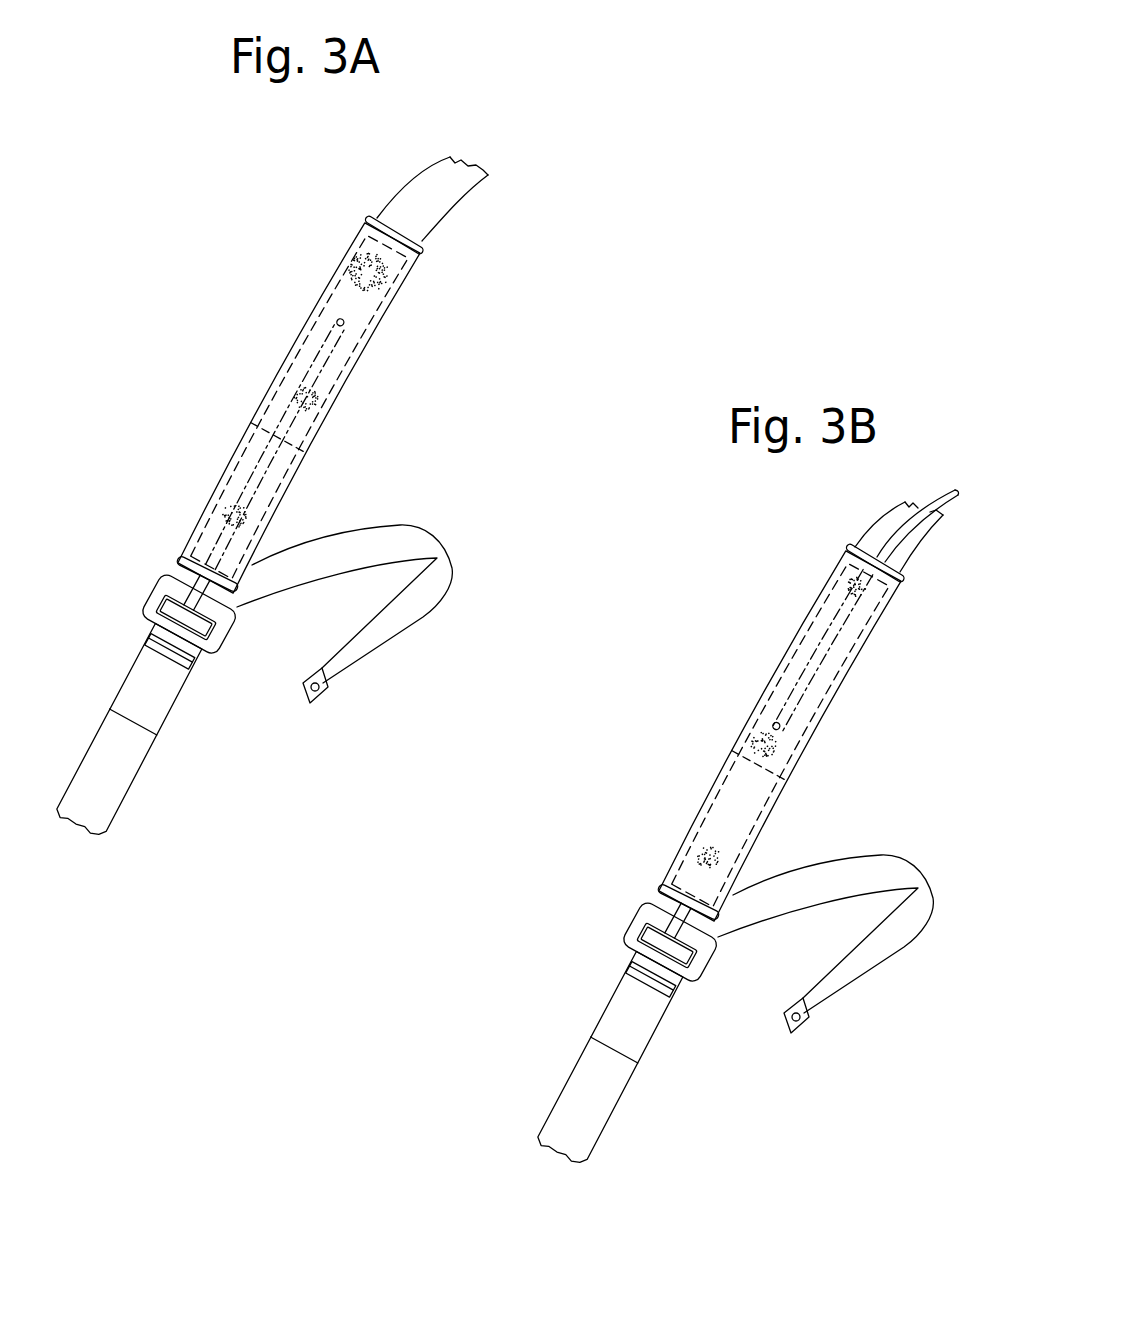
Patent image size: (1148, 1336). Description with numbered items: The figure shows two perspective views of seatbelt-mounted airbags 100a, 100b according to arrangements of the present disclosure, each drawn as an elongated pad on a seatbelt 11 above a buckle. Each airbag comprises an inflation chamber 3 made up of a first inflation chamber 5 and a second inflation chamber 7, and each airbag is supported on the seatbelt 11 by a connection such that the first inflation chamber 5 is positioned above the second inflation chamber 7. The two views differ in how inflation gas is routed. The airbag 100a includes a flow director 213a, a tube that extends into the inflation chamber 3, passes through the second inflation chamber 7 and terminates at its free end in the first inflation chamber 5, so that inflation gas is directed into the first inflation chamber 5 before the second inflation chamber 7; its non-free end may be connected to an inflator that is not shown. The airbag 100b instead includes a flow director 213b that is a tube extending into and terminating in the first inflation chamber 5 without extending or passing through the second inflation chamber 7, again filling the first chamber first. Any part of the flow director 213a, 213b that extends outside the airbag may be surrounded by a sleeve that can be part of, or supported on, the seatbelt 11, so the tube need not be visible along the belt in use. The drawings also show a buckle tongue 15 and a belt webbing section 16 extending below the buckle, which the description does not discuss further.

In FIG. 3A, the airbag 100a is at (244, 283).
In FIG. 3B, the airbag 100b is at (710, 570).
In FIG. 3A, the inflation chamber 3 is at (218, 408).
In FIG. 3B, the inflation chamber 3 is at (695, 755).
In FIG. 3A, the first inflation chamber 5 is at (360, 309).
In FIG. 3B, the first inflation chamber 5 is at (803, 717).
In FIG. 3A, the second inflation chamber 7 is at (280, 480).
In FIG. 3B, the second inflation chamber 7 is at (720, 837).
In FIG. 3A, the seatbelt 11 is at (413, 200).
In FIG. 3B, the seatbelt 11 is at (843, 877).
In FIG. 3A, the buckle tongue 15 is at (162, 588).
In FIG. 3A, the belt webbing section 16 is at (165, 683).
In FIG. 3A, the flow director 213a is at (247, 490).
In FIG. 3B, the flow director 213b is at (810, 665).